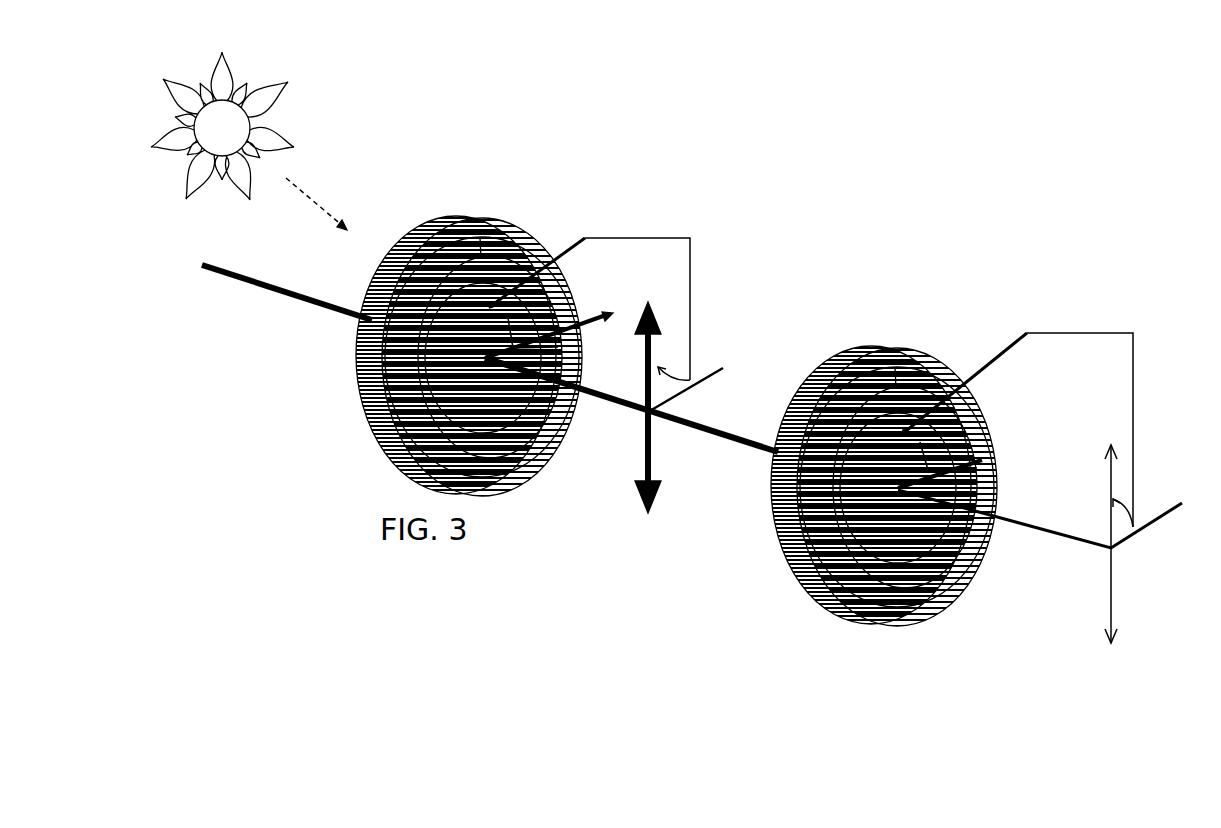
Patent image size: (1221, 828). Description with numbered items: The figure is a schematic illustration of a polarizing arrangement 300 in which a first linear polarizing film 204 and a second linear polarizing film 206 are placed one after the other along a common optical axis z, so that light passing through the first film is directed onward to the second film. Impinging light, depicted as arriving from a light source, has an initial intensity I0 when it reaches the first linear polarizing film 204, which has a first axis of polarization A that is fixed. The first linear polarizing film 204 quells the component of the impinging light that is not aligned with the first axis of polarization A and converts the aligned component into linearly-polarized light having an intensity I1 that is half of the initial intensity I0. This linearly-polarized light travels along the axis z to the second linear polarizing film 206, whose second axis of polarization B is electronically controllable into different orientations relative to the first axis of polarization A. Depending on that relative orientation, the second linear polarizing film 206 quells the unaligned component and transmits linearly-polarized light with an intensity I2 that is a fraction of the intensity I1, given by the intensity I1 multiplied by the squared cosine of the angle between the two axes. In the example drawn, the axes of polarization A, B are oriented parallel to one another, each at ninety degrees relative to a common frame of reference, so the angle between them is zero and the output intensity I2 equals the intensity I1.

The polarimetric optical system 300 is at (775, 158).
The first linear polarizing film 204 is at (548, 157).
The second linear polarizing film 206 is at (902, 272).
The optical axis z is at (471, 356).
The initial intensity I0 is at (318, 189).
The intensity of linearly-polarized light I1 is at (646, 446).
The intensity of linearly-polarized light from second film I2 is at (1111, 577).
The first axis of polarization A is at (488, 395).
The second axis of polarization B is at (900, 510).